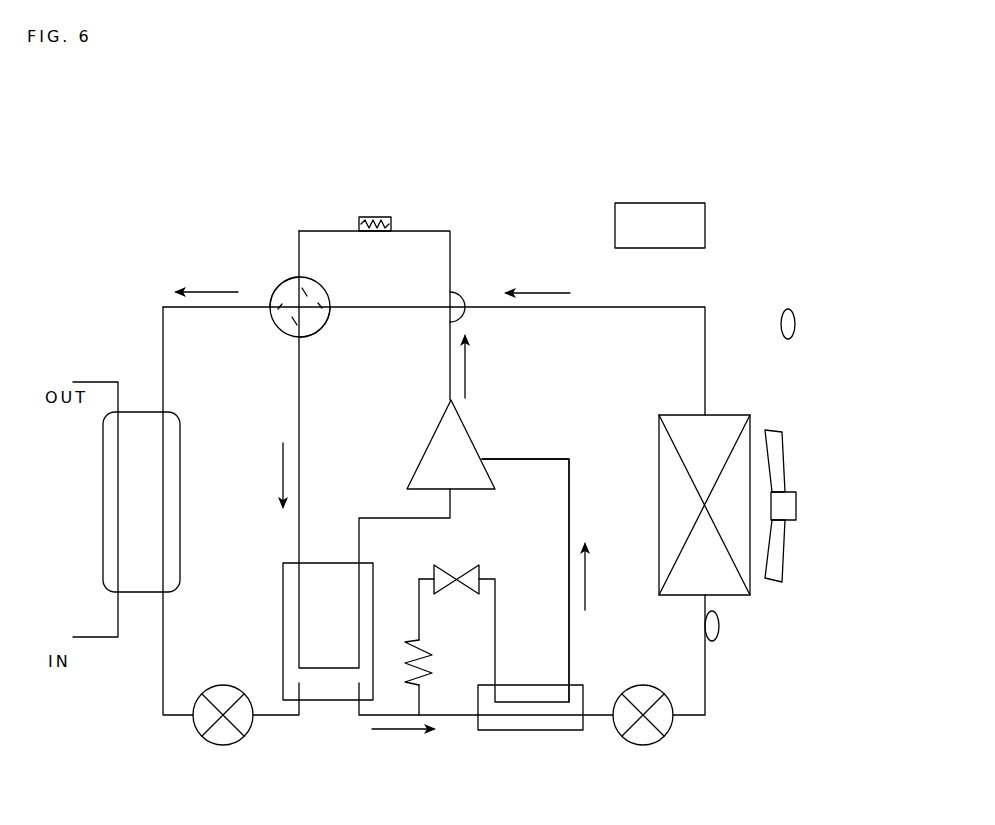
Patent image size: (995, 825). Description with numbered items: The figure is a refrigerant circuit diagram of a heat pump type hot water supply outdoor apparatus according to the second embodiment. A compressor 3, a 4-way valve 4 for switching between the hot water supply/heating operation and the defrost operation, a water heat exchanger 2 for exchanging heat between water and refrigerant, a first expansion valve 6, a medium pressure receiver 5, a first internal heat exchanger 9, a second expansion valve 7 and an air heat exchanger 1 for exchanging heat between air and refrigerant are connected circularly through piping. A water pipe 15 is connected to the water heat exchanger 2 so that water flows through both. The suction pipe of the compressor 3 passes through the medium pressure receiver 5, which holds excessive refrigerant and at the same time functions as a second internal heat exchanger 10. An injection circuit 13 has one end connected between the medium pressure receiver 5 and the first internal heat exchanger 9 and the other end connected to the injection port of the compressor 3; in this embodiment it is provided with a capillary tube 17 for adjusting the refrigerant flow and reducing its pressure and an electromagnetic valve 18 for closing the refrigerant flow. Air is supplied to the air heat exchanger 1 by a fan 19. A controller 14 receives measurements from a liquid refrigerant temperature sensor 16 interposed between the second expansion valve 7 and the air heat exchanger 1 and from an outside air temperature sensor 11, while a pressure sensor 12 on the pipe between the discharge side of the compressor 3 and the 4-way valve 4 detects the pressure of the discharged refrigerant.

The air heat exchanger 1 is at (737, 415).
The water heat exchanger 2 is at (180, 455).
The compressor 3 is at (426, 452).
The 4-way valve 4 is at (283, 284).
The medium pressure receiver 5 is at (281, 629).
The second internal heat exchanger 10 is at (283, 608).
The first expansion valve 6 is at (245, 732).
The second expansion valve 7 is at (665, 735).
The first internal heat exchanger 9 is at (540, 730).
The outside air temperature sensor 11 is at (797, 327).
The pressure sensor 12 is at (391, 218).
The injection circuit 13 is at (523, 459).
The controller 14 is at (690, 203).
The water pipe 15 is at (118, 382).
The liquid refrigerant temperature sensor 16 is at (720, 627).
The capillary tube 17 is at (432, 655).
The electromagnetic valve 18 is at (467, 568).
The fan 19 is at (797, 492).